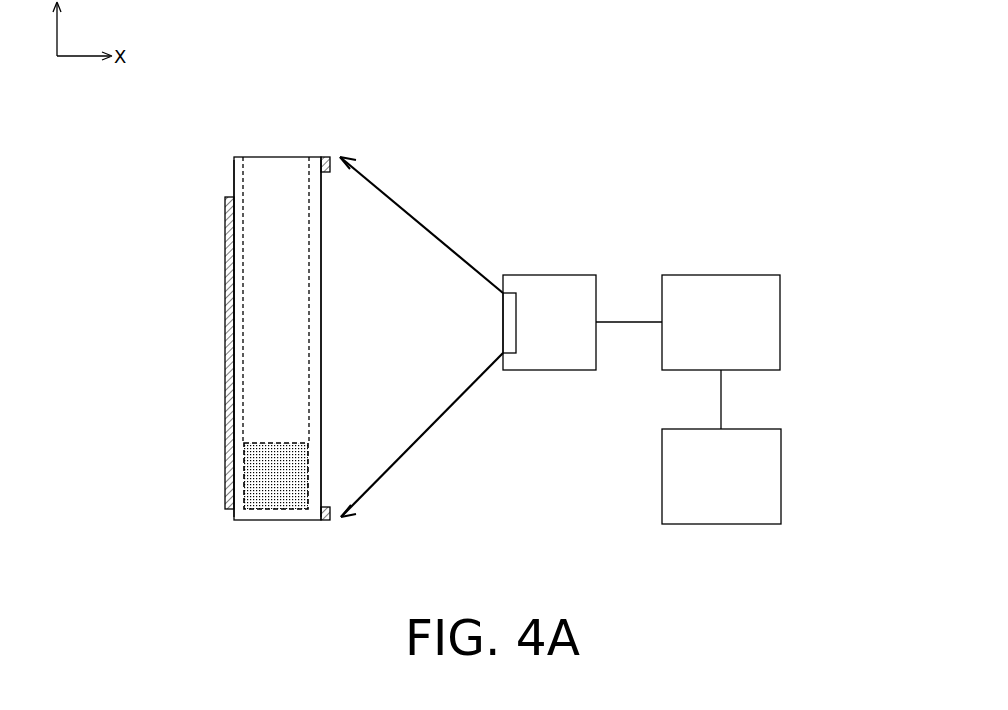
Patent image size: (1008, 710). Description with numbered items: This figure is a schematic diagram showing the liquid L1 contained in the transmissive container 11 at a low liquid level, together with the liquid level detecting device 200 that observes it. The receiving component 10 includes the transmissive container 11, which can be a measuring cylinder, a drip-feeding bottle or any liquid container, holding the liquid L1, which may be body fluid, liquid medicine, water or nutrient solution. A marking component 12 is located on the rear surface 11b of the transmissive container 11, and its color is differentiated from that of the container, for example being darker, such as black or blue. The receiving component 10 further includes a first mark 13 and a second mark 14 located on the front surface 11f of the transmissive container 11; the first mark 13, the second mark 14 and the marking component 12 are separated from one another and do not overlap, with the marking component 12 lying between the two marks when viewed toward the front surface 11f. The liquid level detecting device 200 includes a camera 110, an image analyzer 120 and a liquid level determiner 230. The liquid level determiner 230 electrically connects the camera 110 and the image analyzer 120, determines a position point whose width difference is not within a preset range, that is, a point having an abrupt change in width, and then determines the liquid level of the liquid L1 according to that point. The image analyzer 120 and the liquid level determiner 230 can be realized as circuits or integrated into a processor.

The receiving component 10 is at (223, 140).
The transmissive container 11 is at (278, 522).
The rear surface 11b is at (234, 176).
The front surface 11f is at (321, 388).
The marking component 12 is at (225, 352).
The first mark 13 is at (330, 163).
The second mark 14 is at (332, 513).
The liquid L1 is at (266, 481).
The liquid level detecting device 200 is at (635, 138).
The camera 110 is at (550, 275).
The image analyzer 120 is at (724, 275).
The liquid level determiner 230 is at (781, 476).